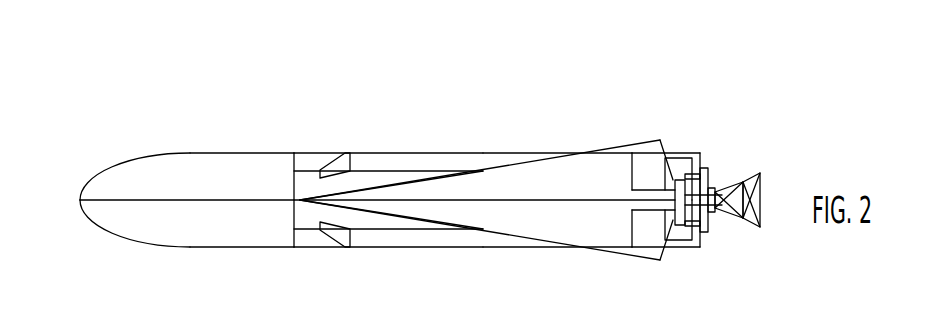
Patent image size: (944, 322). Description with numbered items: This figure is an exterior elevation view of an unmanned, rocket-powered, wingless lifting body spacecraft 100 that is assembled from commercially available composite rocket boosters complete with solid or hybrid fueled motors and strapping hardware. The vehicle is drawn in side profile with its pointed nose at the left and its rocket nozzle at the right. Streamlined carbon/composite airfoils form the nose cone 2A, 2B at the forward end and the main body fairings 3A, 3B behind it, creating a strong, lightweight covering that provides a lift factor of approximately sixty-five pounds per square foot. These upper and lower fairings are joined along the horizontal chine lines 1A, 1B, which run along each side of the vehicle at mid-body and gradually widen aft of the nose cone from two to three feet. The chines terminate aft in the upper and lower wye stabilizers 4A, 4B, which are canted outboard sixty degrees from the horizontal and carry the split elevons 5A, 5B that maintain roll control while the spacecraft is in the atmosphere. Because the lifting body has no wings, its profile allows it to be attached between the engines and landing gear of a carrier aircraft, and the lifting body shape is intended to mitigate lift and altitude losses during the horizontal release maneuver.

The lifting body spacecraft 100 is at (116, 93).
The chine line 1A is at (119, 176).
The chine line 1B is at (119, 226).
The nose cone 2A is at (236, 147).
The nose cone 2B is at (236, 254).
The main body fairing 3A is at (388, 146).
The main body fairing 3B is at (388, 256).
The wye stabilizer 4A is at (486, 146).
The wye stabilizer 4B is at (486, 254).
The split elevon 5A is at (643, 146).
The split elevon 5B is at (643, 255).